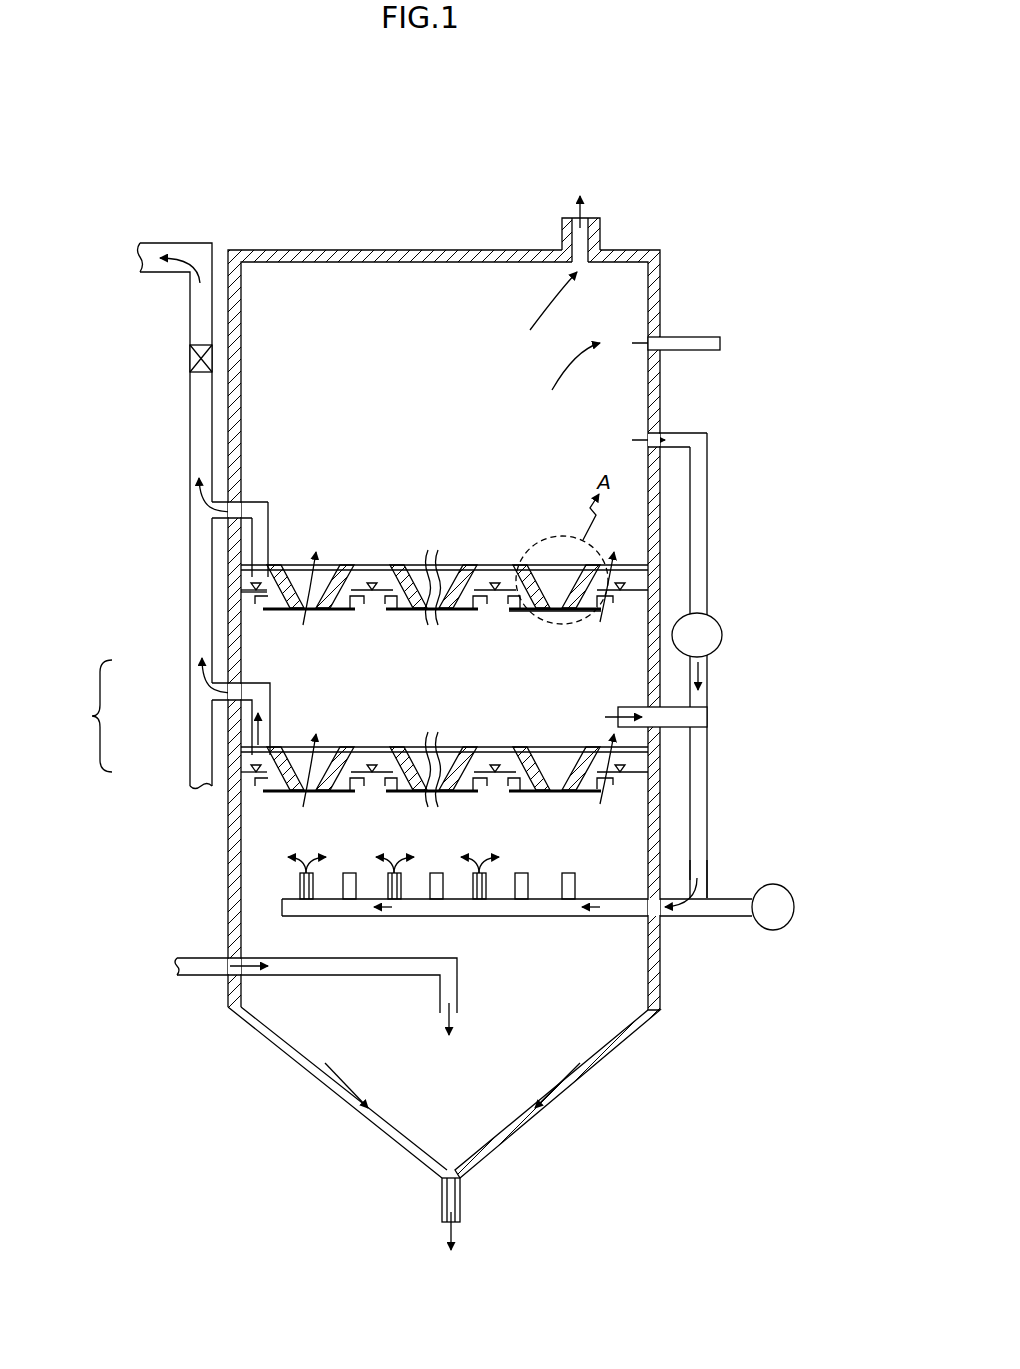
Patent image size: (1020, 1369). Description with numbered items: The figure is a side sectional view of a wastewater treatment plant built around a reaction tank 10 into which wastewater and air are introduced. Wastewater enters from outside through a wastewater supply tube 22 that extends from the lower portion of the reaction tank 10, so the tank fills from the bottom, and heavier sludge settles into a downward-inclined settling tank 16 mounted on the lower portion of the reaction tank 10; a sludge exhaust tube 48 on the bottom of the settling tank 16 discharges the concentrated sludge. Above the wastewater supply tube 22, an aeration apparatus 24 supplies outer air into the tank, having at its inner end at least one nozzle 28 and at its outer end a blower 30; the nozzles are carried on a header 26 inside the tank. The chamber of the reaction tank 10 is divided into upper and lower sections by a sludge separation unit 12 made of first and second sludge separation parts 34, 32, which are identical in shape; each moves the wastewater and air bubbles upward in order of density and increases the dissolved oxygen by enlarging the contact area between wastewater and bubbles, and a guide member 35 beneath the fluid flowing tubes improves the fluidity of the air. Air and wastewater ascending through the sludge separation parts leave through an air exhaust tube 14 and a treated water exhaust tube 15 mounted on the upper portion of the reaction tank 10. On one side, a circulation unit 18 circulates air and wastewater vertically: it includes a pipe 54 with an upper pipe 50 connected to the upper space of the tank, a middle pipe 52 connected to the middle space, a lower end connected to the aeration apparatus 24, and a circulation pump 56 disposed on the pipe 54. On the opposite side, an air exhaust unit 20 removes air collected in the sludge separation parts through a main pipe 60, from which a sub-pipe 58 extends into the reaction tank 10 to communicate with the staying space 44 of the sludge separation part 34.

The reaction tank 10 is at (680, 392).
The sludge separation unit 12 is at (357, 678).
The air exhaust tube 14 is at (600, 232).
The treated water exhaust tube 15 is at (708, 334).
The settling tank 16 is at (585, 1098).
The circulation unit 18 is at (712, 592).
The air exhaust unit 20 is at (180, 468).
The wastewater supply tube 22 is at (190, 977).
The aeration apparatus 24 is at (749, 893).
The spray header 26 is at (283, 907).
The nozzle 28 is at (300, 884).
The blower 30 is at (785, 912).
The second sludge separation part 32 is at (266, 607).
The first sludge separation part 34 is at (272, 770).
The guide member 35 is at (600, 612).
The staying space 44 is at (245, 597).
The sludge exhaust tube 48 is at (462, 1202).
The upper pipe 50 is at (690, 432).
The middle pipe 52 is at (620, 706).
The pipe 54 is at (710, 847).
The circulation pump 56 is at (722, 632).
The sub-pipe 58 is at (258, 549).
The main pipe 60 is at (190, 511).